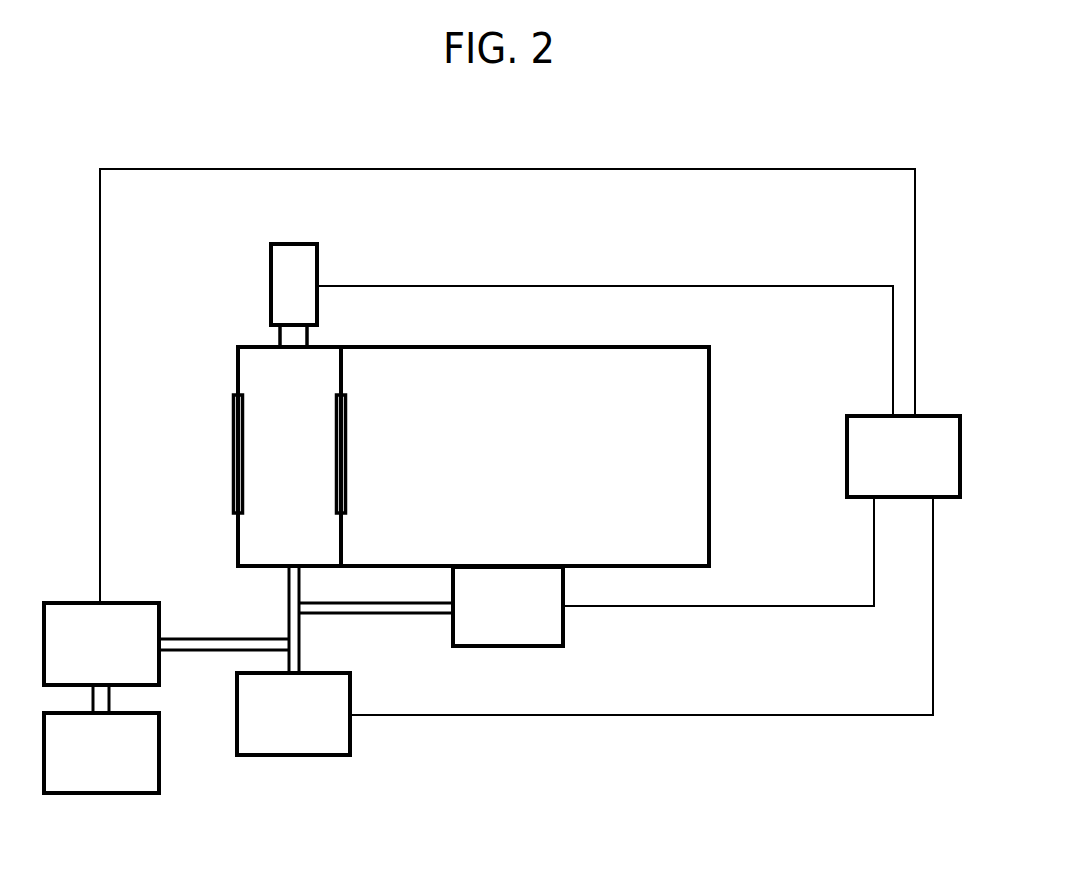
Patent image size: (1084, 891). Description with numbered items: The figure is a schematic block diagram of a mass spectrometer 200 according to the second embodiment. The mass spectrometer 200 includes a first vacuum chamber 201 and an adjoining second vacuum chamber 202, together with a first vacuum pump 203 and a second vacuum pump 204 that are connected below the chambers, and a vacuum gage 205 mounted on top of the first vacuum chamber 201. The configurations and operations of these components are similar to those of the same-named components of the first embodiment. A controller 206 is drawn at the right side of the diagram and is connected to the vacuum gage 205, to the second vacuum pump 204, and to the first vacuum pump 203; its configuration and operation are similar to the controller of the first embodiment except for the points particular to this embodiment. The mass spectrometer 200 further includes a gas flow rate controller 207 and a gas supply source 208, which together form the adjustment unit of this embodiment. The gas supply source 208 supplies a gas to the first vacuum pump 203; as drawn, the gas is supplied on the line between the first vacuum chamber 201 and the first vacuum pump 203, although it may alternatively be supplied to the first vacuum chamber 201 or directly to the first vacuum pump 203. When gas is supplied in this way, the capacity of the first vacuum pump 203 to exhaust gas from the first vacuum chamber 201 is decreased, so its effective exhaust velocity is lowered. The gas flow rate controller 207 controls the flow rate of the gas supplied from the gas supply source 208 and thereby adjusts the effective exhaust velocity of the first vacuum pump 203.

The mass spectrometer 200 is at (805, 150).
The first vacuum chamber 201 is at (290, 456).
The second vacuum chamber 202 is at (525, 456).
The first vacuum pump 203 is at (585, 626).
The second vacuum pump 204 is at (586, 571).
The vacuum gage 205 is at (282, 294).
The controller 206 is at (903, 456).
The gas flow rate controller 207 is at (166, 644).
The gas supply source 208 is at (101, 739).